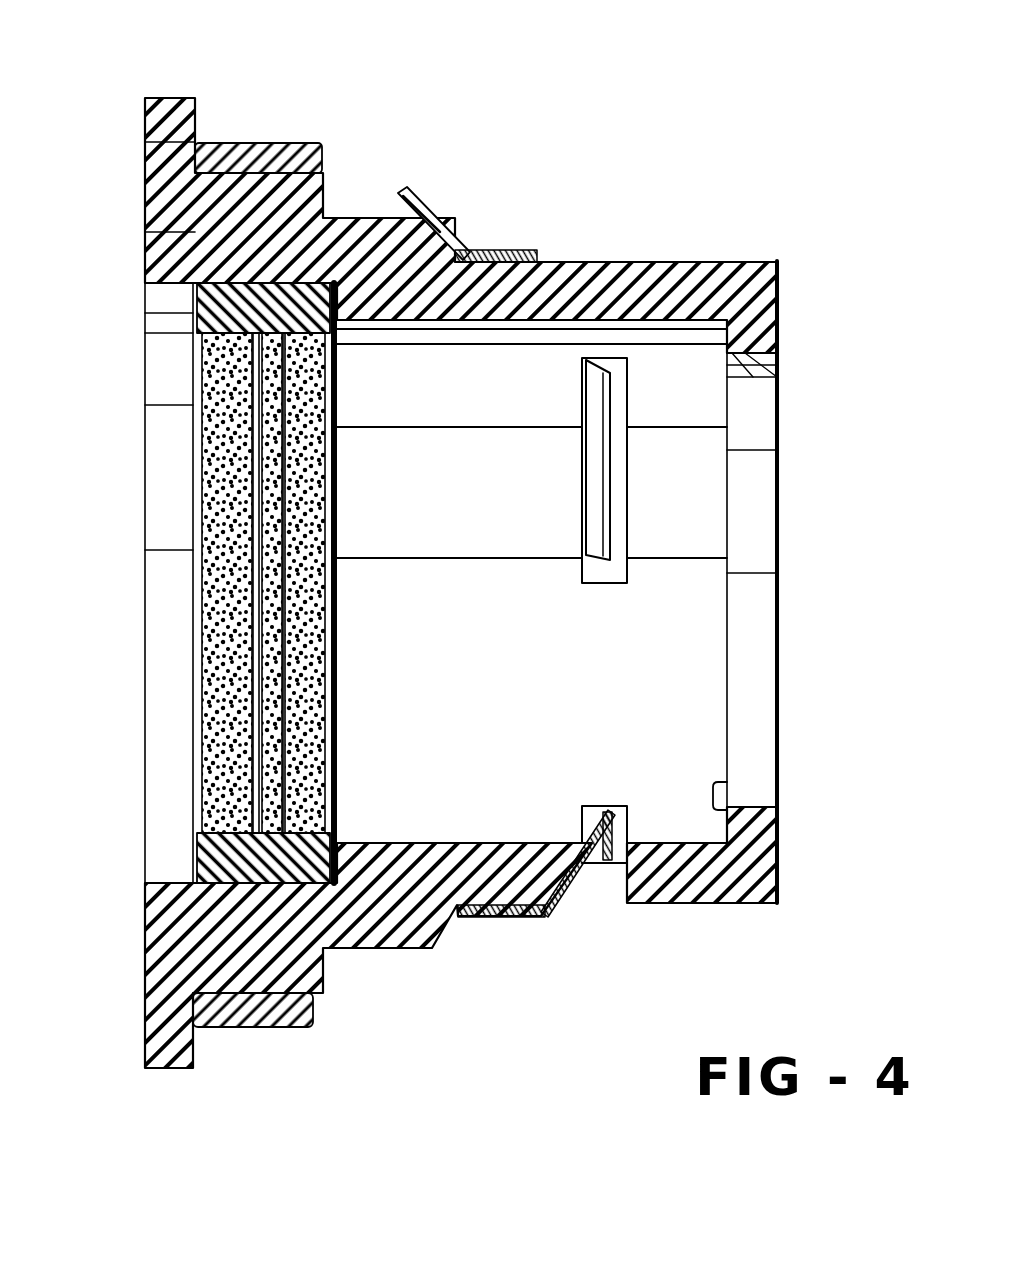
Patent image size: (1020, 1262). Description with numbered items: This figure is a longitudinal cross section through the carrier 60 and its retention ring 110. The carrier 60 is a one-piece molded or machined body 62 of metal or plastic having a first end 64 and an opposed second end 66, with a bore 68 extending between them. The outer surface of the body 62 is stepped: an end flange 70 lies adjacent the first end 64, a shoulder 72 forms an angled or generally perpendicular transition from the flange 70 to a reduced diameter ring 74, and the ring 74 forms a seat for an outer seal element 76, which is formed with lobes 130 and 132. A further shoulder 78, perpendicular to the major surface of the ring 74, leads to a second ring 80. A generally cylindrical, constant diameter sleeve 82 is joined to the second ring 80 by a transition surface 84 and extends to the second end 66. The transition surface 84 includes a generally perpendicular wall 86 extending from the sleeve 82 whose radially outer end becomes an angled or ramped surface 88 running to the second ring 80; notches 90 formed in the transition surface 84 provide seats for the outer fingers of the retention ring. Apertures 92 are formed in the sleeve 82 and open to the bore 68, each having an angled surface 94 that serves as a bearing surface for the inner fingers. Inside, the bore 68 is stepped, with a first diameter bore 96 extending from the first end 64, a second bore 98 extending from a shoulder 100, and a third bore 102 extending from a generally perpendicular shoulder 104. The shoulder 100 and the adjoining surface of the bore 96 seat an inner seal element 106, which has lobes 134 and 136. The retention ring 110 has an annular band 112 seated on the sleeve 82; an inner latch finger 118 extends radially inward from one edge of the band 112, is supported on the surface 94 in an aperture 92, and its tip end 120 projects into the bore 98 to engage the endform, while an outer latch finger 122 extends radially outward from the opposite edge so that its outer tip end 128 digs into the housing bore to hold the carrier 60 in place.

The carrier 60 is at (472, 92).
The body 62 is at (662, 272).
The first end 64 is at (145, 192).
The second end 66 is at (777, 305).
The bore 68 is at (444, 520).
The end flange 70 is at (175, 98).
The shoulder 72 is at (200, 143).
The reduced diameter ring 74 is at (270, 143).
The outer seal element 76 is at (145, 143).
The shoulder 78 is at (323, 215).
The second ring 80 is at (353, 216).
The sleeve 82 is at (745, 262).
The transition surface 84 is at (442, 218).
The wall 86 is at (463, 920).
The ramped surface 88 is at (455, 935).
The notches 90 is at (460, 256).
The apertures 92 is at (615, 393).
The angled surface 94 is at (560, 880).
The first diameter bore 96 is at (196, 290).
The second bore 98 is at (440, 322).
The shoulder 100 is at (338, 350).
The third bore 102 is at (780, 377).
The shoulder 104 is at (730, 782).
The inner seal element 106 is at (200, 292).
The retention ring 110 is at (548, 925).
The band 112 is at (530, 250).
The latch finger 118 is at (600, 495).
The tip end 120 is at (622, 527).
The outer latch finger 122 is at (420, 198).
The outer tip end 128 is at (395, 205).
The lobe 130 is at (217, 1018).
The lobe 132 is at (317, 1007).
The lobe 134 is at (203, 330).
The lobe 136 is at (262, 345).